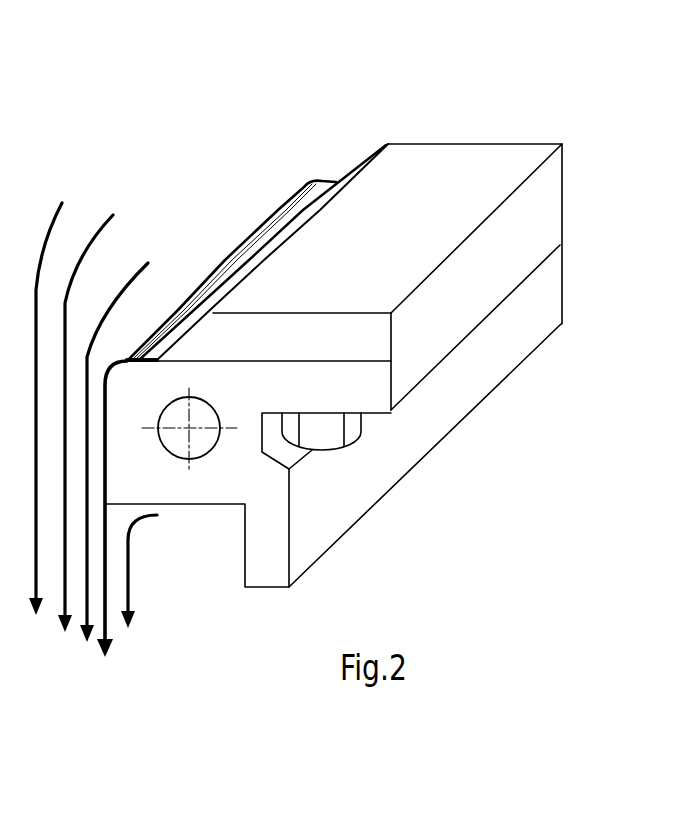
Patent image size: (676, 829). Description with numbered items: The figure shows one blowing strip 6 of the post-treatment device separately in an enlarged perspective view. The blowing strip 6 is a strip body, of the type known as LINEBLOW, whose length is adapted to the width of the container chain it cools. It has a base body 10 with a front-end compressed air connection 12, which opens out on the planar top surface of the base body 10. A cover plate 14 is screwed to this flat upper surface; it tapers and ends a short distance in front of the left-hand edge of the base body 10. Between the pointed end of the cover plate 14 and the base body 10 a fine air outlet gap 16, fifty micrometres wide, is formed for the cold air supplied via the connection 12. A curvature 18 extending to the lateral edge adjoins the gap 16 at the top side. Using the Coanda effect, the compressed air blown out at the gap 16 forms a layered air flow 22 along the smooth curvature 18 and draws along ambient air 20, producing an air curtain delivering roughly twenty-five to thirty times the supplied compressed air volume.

The blowing strip 6 is at (250, 160).
The base body 10 is at (237, 458).
The compressed air connection 12 is at (162, 443).
The cover plate 14 is at (399, 262).
The air outlet gap 16 is at (158, 357).
The curvature 18 is at (228, 277).
The ambient air 20 is at (146, 268).
The layered air flow 22 is at (105, 617).